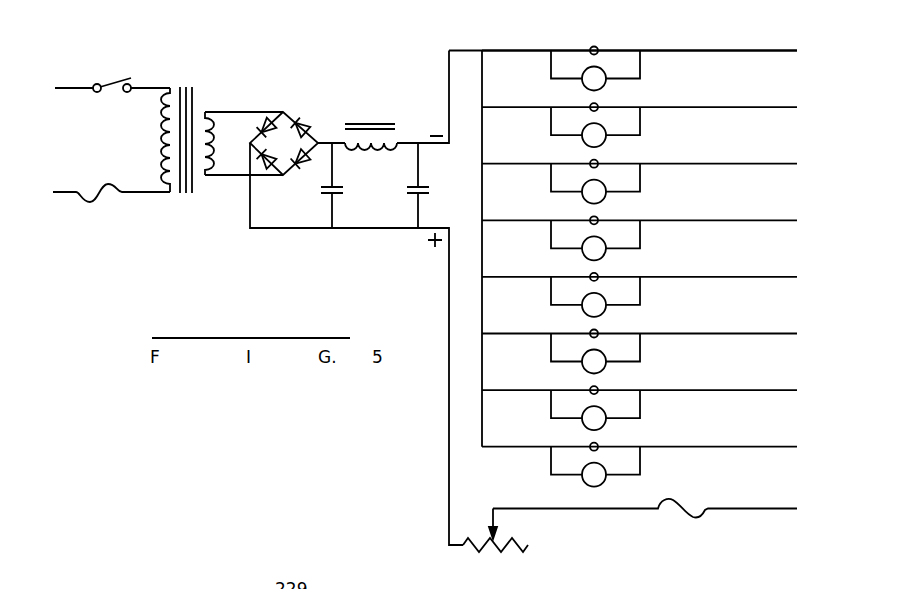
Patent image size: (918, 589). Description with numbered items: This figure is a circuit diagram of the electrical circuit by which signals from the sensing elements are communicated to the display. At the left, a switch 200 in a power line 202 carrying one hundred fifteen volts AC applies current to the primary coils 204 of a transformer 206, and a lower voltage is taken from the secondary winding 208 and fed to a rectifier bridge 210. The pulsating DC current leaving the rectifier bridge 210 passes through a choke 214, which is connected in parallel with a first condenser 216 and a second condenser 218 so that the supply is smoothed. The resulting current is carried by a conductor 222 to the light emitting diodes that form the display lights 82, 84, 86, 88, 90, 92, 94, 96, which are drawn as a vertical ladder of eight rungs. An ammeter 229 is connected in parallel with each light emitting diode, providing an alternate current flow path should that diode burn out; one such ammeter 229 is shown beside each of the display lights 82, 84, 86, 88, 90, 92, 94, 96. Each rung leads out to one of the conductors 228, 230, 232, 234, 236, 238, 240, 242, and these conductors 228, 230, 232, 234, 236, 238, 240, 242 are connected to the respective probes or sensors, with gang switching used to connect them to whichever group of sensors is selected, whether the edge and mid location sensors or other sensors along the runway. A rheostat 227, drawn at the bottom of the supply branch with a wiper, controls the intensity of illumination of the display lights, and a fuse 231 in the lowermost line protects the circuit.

The switch 200 is at (113, 83).
The power line 202 is at (72, 86).
The primary coils 204 is at (163, 154).
The transformer 206 is at (187, 87).
The secondary winding 208 is at (205, 104).
The rectifier bridge 210 is at (289, 108).
The choke 214 is at (367, 122).
The first condenser 216 is at (340, 178).
The second condenser 218 is at (422, 178).
The conductor 222 is at (458, 50).
The rheostat 227 is at (503, 553).
The conductor 228 is at (713, 447).
The ammeter 229 is at (582, 82).
The conductor 230 is at (713, 390).
The fuse 231 is at (692, 518).
The conductor 232 is at (713, 334).
The conductor 234 is at (713, 277).
The conductor 236 is at (713, 220).
The conductor 238 is at (713, 164).
The conductor 240 is at (713, 107).
The conductor 242 is at (713, 50).
The display light 82 is at (598, 444).
The display light 84 is at (598, 387).
The display light 86 is at (598, 330).
The display light 88 is at (598, 274).
The display light 90 is at (598, 217).
The display light 92 is at (598, 161).
The display light 94 is at (598, 104).
The display light 96 is at (598, 48).